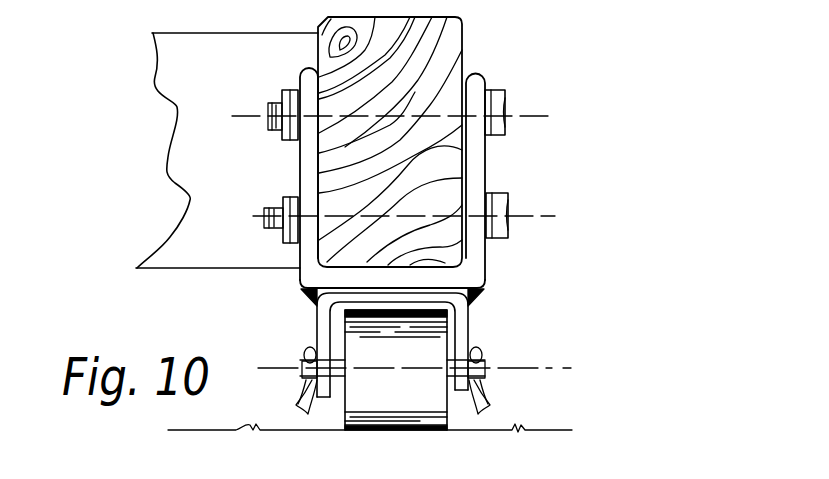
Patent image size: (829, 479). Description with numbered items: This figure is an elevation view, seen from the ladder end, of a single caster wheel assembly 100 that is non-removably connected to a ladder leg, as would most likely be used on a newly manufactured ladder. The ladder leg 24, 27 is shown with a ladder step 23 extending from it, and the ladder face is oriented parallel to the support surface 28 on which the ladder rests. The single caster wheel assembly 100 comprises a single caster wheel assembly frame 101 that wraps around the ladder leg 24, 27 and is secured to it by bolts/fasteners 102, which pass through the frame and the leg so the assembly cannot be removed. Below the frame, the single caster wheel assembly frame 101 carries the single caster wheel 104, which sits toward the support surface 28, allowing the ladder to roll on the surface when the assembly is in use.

The ladder step 23 is at (164, 166).
The ladder leg 24 is at (450, 142).
The ladder leg 27 is at (463, 58).
The support surface 28 is at (563, 428).
The single caster wheel assembly 100 is at (617, 192).
The single caster wheel assembly frame 101 is at (487, 163).
The bolts/fasteners 102 is at (505, 125).
The single caster wheel 104 is at (425, 350).